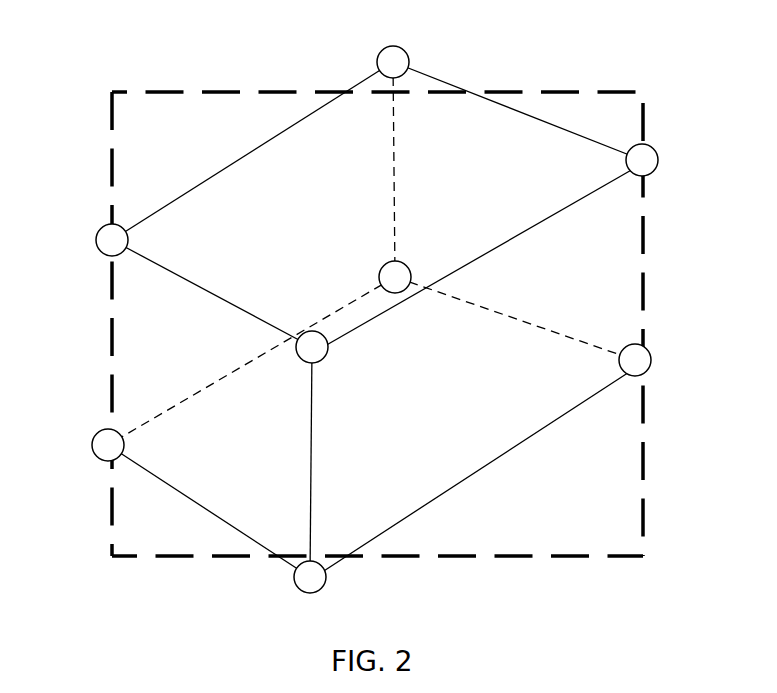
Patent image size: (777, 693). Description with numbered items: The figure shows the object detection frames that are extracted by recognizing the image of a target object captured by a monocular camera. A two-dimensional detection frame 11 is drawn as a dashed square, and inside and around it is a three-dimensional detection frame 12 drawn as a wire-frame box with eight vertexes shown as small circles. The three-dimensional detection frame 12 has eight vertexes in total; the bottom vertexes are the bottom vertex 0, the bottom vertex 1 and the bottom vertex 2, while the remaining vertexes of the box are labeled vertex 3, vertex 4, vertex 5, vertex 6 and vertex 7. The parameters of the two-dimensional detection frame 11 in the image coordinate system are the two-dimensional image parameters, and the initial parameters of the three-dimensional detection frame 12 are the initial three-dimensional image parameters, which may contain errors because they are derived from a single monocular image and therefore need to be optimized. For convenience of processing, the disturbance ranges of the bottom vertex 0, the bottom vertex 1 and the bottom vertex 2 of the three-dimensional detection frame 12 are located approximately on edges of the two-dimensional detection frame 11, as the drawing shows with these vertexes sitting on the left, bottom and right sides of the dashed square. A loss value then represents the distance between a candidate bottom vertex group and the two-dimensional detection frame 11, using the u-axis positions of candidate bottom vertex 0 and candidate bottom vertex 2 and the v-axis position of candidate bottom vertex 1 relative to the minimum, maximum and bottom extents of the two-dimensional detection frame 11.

The 2D detection frame 11 is at (112, 120).
The 3D detection frame 12 is at (297, 123).
The bottom vertex 0 is at (96, 460).
The bottom vertex 1 is at (322, 592).
The bottom vertex 2 is at (653, 360).
The vertex 3 is at (409, 263).
The vertex 4 is at (92, 240).
The vertex 5 is at (323, 366).
The vertex 6 is at (663, 160).
The vertex 7 is at (413, 58).